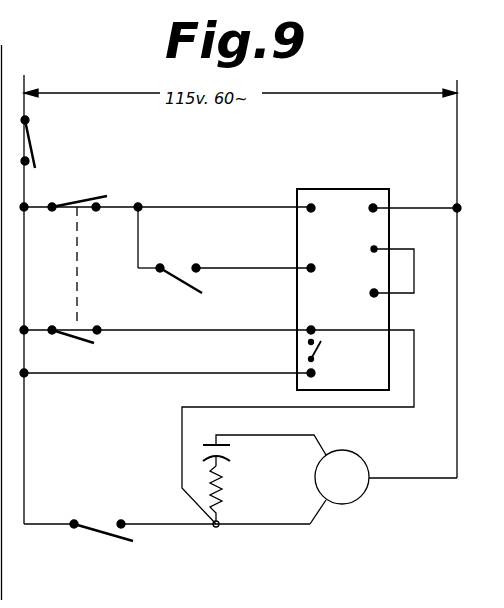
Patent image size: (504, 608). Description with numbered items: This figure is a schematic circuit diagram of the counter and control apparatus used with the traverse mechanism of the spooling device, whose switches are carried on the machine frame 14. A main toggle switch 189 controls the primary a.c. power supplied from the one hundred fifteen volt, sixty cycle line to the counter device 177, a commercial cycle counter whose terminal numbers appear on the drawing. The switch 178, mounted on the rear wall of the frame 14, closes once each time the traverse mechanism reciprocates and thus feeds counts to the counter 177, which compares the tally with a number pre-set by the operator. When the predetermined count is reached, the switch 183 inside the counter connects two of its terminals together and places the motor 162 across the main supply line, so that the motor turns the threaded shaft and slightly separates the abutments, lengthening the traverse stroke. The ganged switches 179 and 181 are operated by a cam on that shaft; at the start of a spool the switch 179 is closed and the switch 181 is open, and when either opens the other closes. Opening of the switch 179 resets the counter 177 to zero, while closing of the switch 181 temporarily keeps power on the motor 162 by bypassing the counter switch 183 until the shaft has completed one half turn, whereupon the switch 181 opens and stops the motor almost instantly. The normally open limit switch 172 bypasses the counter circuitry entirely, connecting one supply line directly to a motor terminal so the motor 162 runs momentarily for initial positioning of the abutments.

The machine frame 14 is at (5, 66).
The main toggle switch 189 is at (40, 142).
The ganged switch 179 is at (93, 192).
The switch 178 is at (179, 265).
The counter device 177 is at (346, 197).
The ganged switch 181 is at (80, 345).
The counter switch 183 is at (322, 355).
The limit switch 172 is at (92, 520).
The motor 162 is at (350, 497).